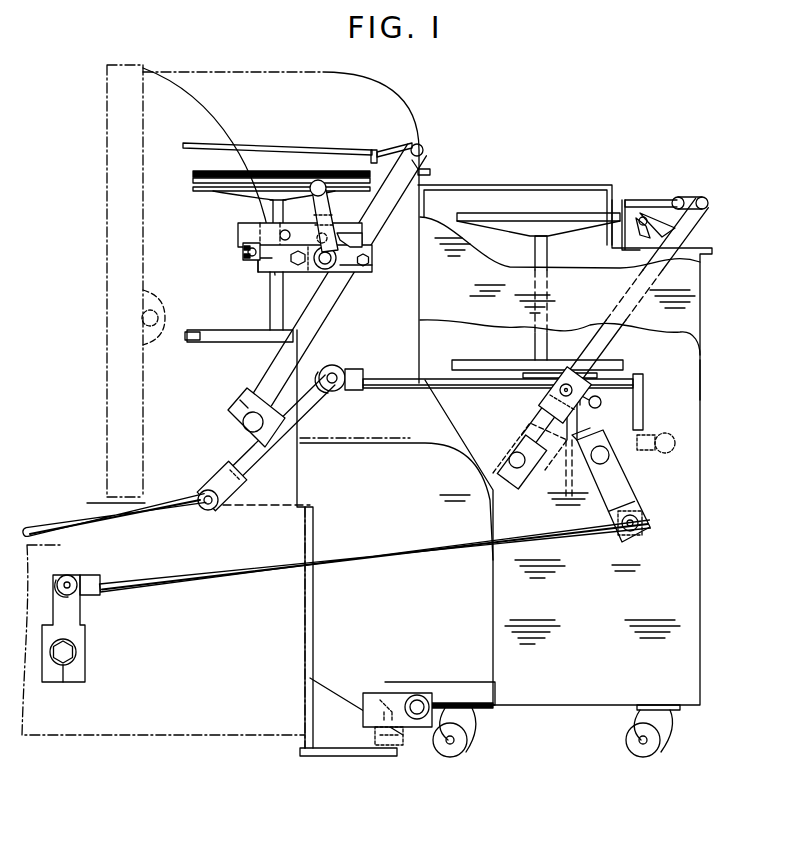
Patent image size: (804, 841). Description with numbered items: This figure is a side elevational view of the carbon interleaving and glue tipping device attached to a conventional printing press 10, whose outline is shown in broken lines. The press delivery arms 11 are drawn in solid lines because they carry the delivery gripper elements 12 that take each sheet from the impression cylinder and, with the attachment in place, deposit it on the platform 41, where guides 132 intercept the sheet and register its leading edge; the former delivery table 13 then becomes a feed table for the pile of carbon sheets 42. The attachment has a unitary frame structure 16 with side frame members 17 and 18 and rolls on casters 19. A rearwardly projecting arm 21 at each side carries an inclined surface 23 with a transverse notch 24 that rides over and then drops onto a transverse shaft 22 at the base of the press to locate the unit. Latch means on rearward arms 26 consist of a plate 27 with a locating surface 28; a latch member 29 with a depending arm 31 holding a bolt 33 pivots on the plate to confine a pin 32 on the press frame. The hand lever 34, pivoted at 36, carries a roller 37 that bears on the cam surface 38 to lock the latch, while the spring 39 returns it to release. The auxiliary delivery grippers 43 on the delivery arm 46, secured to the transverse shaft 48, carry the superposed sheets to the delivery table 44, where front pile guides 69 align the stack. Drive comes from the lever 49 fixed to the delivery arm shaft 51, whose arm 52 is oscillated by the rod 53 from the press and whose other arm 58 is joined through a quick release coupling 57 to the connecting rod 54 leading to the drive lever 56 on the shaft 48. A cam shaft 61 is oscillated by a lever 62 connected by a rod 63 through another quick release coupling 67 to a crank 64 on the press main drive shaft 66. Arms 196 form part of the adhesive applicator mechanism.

The press 10 is at (183, 95).
The platform 41 is at (283, 146).
The guides 132 is at (372, 152).
The delivery gripper elements 12 is at (393, 147).
The arms 196 is at (430, 170).
The frame structure 16 is at (552, 171).
The delivery table 44 is at (499, 213).
The side frame member 18 is at (580, 200).
The front pile guides 69 is at (623, 205).
The auxiliary delivery grippers 43 is at (660, 205).
The pile of carbon sheets 42 is at (215, 173).
The delivery table 13 is at (240, 192).
The hand lever 34 is at (324, 208).
The latch member 29 is at (245, 231).
The bolt 33 is at (244, 248).
The depending arm 31 is at (243, 253).
The pin 32 is at (250, 257).
The locating surface 28 is at (258, 266).
The plate 27 is at (268, 272).
The spring 39 is at (307, 262).
The cam surface 38 is at (362, 245).
The roller 37 is at (372, 262).
The arms 26 is at (372, 268).
The pivot 36 is at (334, 268).
The delivery arms 11 is at (330, 297).
The quick release coupling 57 is at (346, 372).
The connecting rod 54 is at (420, 378).
The side frame member 17 is at (695, 326).
The delivery arm 46 is at (612, 345).
The drive lever 56 is at (535, 410).
The delivery arm shaft 51 is at (243, 422).
The arm 58 is at (312, 409).
The arm 52 is at (222, 480).
The lever 49 is at (272, 446).
The cam shaft 61 is at (609, 456).
The transverse shaft 48 is at (517, 468).
The lever 62 is at (620, 492).
The rod 53 is at (65, 520).
The rod 63 is at (375, 552).
The quick release coupling 67 is at (85, 572).
The crank 64 is at (70, 612).
The main drive shaft 66 is at (67, 652).
The inclined surface 23 is at (373, 700).
The transverse notch 24 is at (417, 694).
The arm 21 is at (452, 690).
The transverse shaft 22 is at (416, 720).
The casters 19 is at (622, 745).